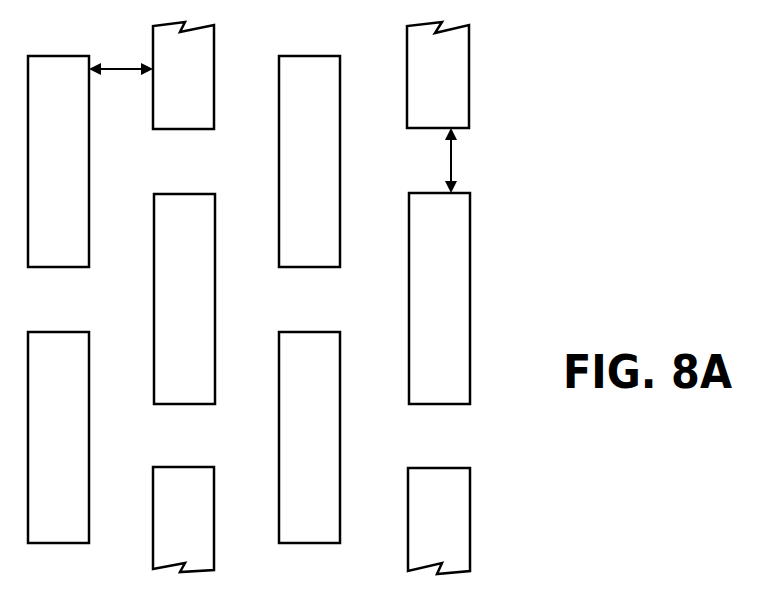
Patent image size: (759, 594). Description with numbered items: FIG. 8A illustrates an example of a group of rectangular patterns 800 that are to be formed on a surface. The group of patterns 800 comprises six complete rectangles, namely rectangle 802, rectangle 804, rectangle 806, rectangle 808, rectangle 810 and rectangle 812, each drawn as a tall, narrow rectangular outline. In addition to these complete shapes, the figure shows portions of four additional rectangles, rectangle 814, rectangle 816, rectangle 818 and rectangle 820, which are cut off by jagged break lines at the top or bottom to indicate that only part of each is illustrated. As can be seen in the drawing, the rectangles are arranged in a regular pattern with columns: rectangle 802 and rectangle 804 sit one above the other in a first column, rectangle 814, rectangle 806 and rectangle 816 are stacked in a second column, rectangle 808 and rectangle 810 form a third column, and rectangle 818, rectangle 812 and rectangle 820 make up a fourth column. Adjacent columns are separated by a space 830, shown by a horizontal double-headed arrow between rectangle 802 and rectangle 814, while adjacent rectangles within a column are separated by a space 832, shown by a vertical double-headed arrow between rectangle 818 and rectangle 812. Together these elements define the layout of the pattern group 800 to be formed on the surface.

The group of rectangular patterns 800 is at (630, 107).
The rectangle 802 is at (89, 160).
The rectangle 804 is at (89, 423).
The rectangle 806 is at (215, 290).
The rectangle 808 is at (340, 155).
The rectangle 810 is at (340, 430).
The rectangle 812 is at (470, 268).
The rectangle 814 is at (214, 48).
The rectangle 816 is at (214, 560).
The rectangle 818 is at (469, 53).
The rectangle 820 is at (470, 515).
The space 830 is at (125, 67).
The space 832 is at (451, 157).